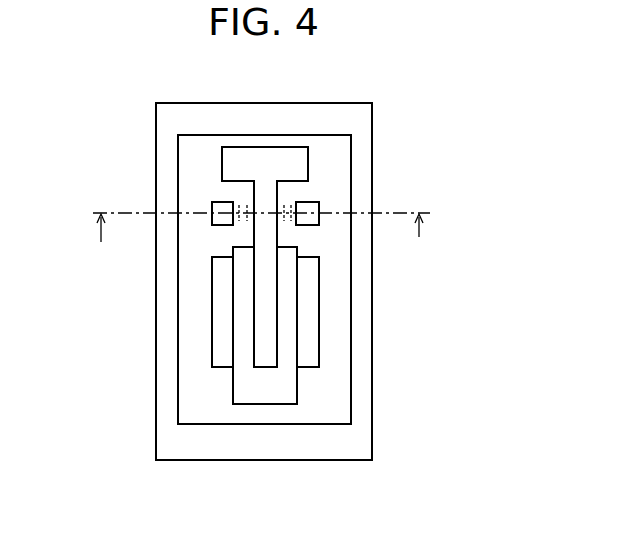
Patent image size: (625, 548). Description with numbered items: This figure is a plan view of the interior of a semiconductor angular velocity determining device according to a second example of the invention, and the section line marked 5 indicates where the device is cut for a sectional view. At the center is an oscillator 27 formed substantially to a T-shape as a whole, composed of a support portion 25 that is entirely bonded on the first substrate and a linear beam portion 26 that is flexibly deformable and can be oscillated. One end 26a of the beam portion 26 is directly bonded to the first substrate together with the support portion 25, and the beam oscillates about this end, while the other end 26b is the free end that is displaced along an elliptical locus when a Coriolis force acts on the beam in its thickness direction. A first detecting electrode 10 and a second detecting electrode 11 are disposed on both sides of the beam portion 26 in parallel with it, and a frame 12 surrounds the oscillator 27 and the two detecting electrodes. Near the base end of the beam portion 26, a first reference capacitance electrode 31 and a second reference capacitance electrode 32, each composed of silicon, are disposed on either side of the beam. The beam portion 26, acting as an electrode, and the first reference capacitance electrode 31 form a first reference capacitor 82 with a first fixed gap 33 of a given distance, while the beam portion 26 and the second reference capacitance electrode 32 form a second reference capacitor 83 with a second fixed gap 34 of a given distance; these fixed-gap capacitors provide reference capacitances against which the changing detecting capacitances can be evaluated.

The first detecting electrode 10 is at (218, 356).
The second detecting electrode 11 is at (310, 350).
The frame 12 is at (163, 411).
The support portion 25 is at (278, 155).
The beam portion 26 is at (278, 298).
The one end of the beam portion 26a is at (257, 192).
The other end of the beam portion 26b is at (277, 353).
The oscillator 27 is at (268, 357).
The first reference capacitance electrode 31 is at (205, 211).
The second reference capacitance electrode 32 is at (320, 207).
The first fixed gap 33 is at (228, 222).
The second fixed gap 34 is at (302, 205).
The first reference capacitor 82 is at (222, 220).
The second reference capacitor 83 is at (308, 223).
The section line 5- 5 is at (260, 243).